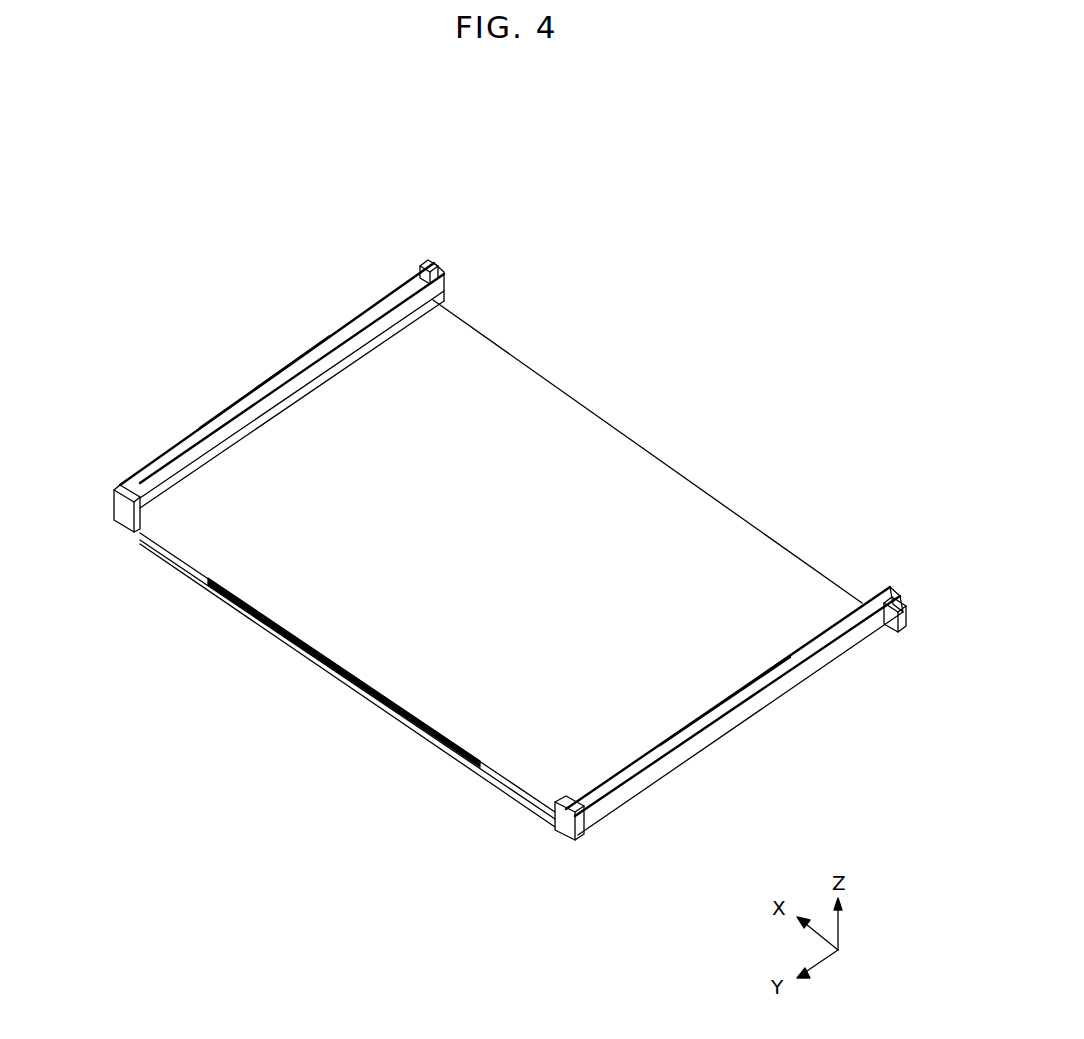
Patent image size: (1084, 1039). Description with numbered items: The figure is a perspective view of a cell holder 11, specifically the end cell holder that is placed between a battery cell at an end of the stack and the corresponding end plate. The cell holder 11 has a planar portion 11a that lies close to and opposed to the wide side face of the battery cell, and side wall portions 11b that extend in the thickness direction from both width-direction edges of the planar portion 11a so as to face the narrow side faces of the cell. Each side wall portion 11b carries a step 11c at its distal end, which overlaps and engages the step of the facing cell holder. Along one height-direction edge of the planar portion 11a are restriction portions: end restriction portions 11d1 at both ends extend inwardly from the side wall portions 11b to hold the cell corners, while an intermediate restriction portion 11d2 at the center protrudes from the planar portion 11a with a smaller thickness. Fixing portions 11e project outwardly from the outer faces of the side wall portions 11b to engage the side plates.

The cell holder 11 is at (675, 296).
The planar portion 11a is at (632, 500).
The side wall portion 11b is at (197, 432).
The step 11c is at (325, 345).
The end restriction portion 11d1 is at (132, 517).
The intermediate restriction portion 11d2 is at (326, 675).
The fixing portion 11e is at (421, 264).